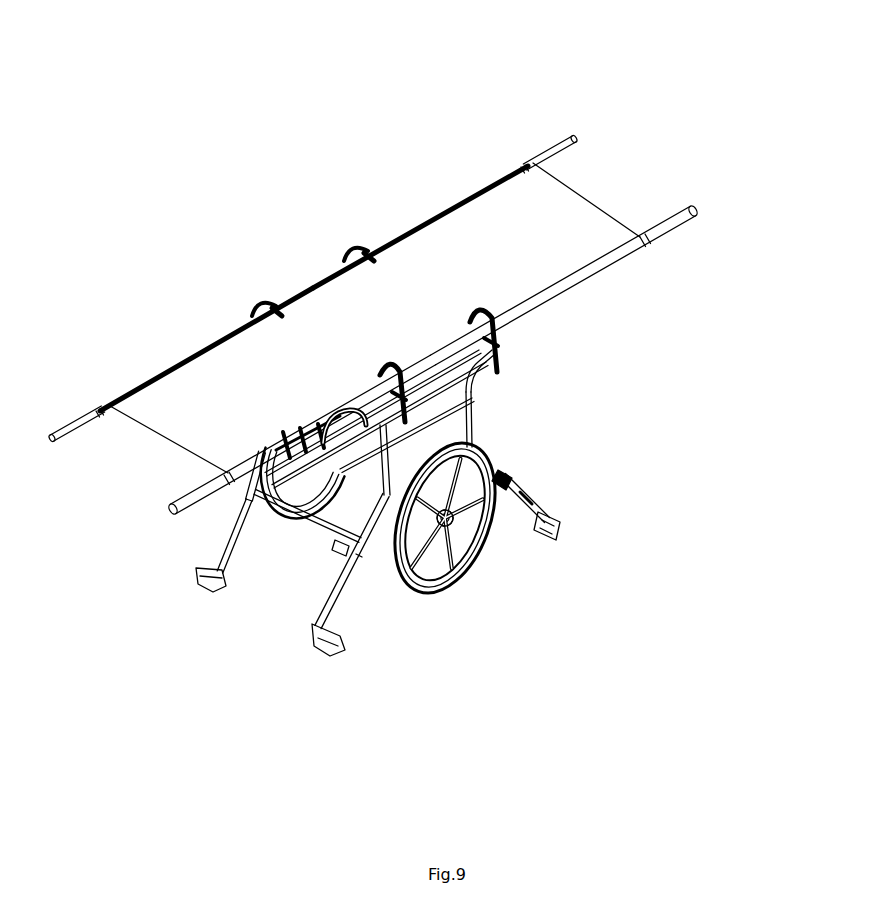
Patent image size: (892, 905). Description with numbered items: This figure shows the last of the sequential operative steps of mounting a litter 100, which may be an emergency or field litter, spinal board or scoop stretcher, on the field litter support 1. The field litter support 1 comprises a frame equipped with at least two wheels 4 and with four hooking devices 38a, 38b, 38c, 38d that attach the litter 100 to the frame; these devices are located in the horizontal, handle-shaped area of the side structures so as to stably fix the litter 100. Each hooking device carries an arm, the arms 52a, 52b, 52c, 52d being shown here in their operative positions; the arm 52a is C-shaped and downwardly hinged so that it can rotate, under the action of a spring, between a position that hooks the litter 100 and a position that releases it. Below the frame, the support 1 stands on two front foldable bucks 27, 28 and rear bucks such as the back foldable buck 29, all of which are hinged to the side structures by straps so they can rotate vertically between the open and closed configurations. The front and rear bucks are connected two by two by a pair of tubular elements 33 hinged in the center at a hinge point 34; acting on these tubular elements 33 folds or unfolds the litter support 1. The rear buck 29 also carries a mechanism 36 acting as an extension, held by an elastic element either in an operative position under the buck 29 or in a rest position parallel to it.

The litter 100 is at (487, 218).
The field litter support 1 is at (476, 617).
The wheels 4 is at (494, 548).
The front foldable buck 27 is at (338, 603).
The front foldable buck 28 is at (233, 543).
The back foldable buck 29 is at (522, 492).
The tubular elements 33 is at (332, 548).
The hinge point 34 is at (305, 523).
The mechanism 36 is at (553, 545).
The hooking device 38a is at (250, 302).
The hooking device 38b is at (344, 241).
The hooking device 38c is at (513, 348).
The hooking device 38d is at (406, 384).
The C-shaped arm 52a is at (252, 312).
The arm 52b is at (355, 247).
The arm 52c is at (489, 317).
The arm 52d is at (380, 373).